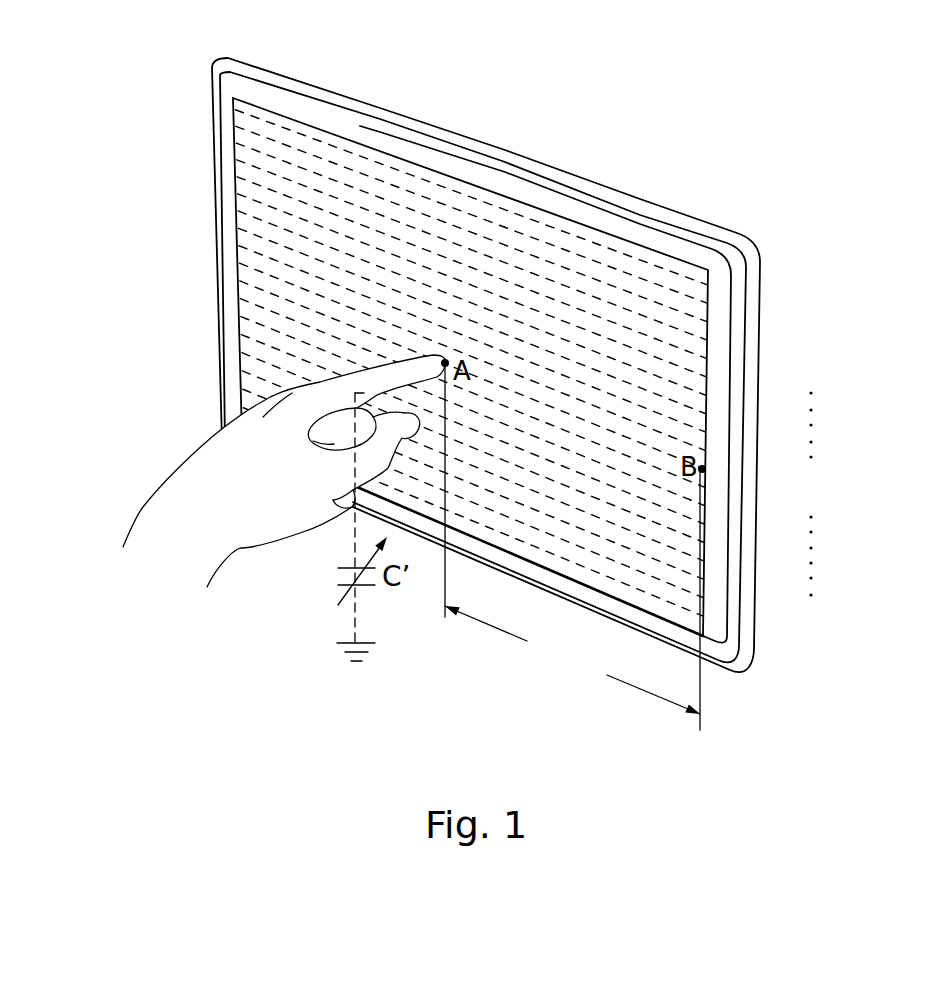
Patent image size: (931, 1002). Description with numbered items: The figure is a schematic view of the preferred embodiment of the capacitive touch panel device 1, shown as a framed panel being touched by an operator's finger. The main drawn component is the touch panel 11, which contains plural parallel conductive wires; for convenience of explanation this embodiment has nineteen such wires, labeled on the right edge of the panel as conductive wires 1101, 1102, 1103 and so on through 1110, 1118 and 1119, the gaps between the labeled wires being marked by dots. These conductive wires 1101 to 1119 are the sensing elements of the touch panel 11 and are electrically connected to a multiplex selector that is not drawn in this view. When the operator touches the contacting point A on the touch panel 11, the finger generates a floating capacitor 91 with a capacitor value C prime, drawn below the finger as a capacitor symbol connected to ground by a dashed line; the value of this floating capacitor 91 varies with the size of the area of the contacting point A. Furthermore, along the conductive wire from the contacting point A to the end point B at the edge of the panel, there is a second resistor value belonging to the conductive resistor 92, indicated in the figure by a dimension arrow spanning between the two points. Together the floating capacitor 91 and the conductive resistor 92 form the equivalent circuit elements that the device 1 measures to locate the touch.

The capacitive touch panel device 1 is at (165, 78).
The touch panel 11 is at (492, 389).
The conductive wire 1101 is at (707, 282).
The conductive wire 1102 is at (705, 300).
The conductive wire 1103 is at (703, 318).
The conductive wire 1110 is at (703, 469).
The conductive wire 1118 is at (700, 598).
The conductive wire 1119 is at (700, 618).
The floating capacitor 91 is at (335, 573).
The conductive resistor 92 is at (572, 546).